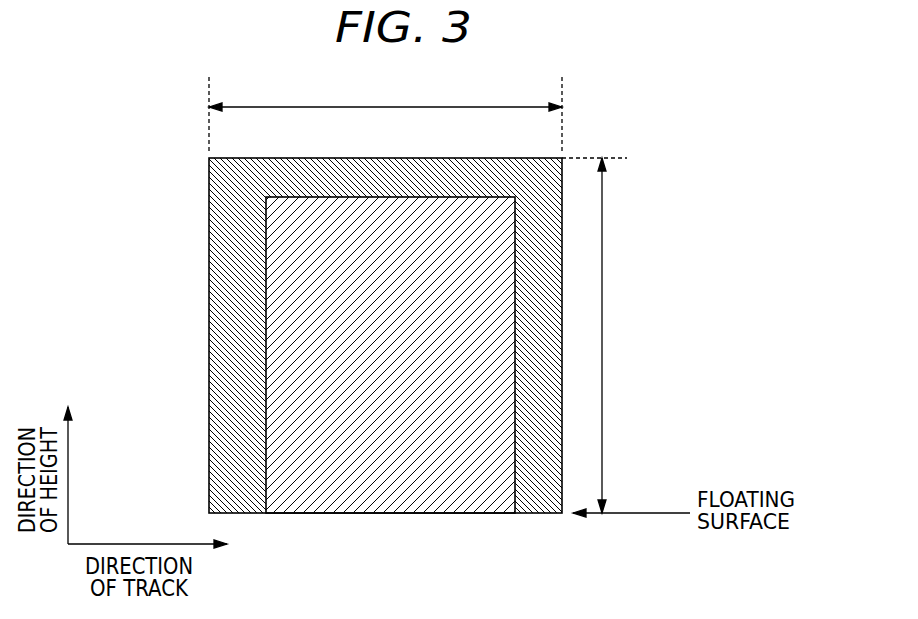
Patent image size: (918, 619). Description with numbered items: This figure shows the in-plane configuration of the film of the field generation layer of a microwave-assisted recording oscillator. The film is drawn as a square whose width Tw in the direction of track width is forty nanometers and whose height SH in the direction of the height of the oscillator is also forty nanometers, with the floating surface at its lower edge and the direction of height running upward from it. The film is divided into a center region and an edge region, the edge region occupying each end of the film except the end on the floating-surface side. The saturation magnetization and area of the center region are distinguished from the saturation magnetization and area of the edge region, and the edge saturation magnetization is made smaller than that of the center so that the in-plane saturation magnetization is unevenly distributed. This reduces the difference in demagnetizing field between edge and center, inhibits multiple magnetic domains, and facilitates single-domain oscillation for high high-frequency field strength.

The width in direction of track width Tw is at (385, 114).
The height in direction of oscillator height SH is at (600, 335).